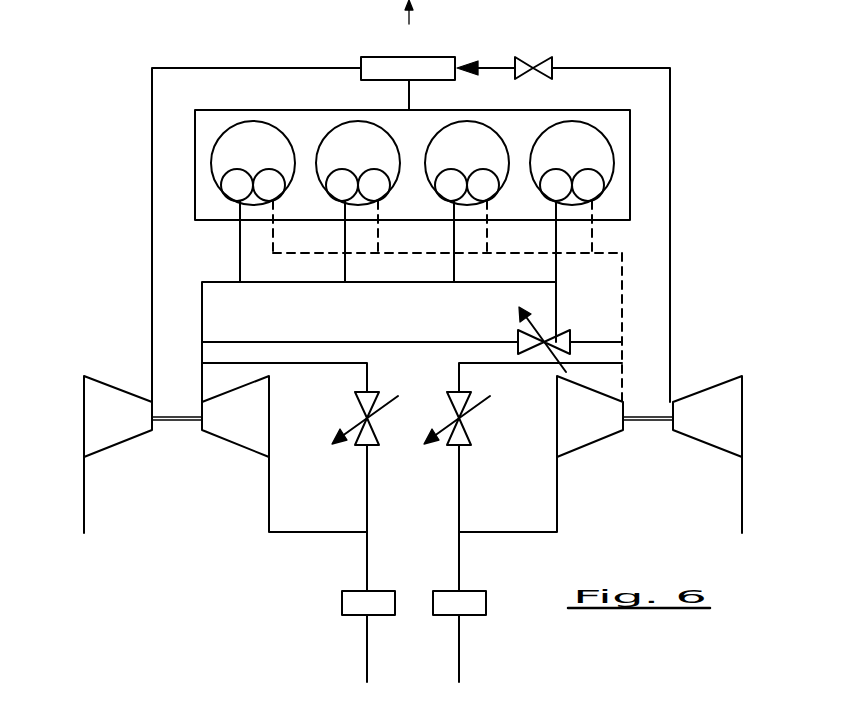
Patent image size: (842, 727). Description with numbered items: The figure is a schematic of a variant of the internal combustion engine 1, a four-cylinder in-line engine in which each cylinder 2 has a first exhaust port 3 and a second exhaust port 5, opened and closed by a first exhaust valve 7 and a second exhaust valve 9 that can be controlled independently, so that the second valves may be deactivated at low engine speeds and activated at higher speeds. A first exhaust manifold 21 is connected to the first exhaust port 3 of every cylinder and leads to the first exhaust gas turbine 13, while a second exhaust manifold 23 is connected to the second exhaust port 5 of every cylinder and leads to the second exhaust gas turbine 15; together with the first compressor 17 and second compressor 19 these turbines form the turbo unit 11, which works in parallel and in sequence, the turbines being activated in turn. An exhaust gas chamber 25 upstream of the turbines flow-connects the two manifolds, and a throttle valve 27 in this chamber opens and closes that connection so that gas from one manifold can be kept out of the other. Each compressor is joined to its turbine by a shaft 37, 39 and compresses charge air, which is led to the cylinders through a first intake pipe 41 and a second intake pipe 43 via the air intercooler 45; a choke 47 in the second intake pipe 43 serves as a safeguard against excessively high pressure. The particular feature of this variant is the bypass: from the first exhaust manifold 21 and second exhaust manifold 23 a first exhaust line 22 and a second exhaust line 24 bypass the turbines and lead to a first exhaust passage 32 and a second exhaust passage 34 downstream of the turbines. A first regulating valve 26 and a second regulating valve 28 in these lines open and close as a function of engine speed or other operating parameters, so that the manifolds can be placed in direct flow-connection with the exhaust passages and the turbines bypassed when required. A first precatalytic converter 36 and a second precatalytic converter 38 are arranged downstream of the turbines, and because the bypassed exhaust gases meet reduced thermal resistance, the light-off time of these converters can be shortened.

The internal combustion engine 1 is at (630, 125).
The cylinder 2 is at (211, 162).
The first exhaust port 3 is at (226, 200).
The second exhaust port 5 is at (270, 203).
The first exhaust valve 7 is at (233, 204).
The second exhaust valve 9 is at (287, 200).
The turbo unit 11 is at (608, 468).
The first exhaust gas turbine 13 is at (237, 432).
The second exhaust gas turbine 15 is at (578, 432).
The first compressor 17 is at (103, 427).
The second compressor 19 is at (703, 432).
The first exhaust manifold 21 is at (202, 302).
The first exhaust line 22 is at (367, 490).
The second exhaust manifold 23 is at (622, 280).
The second exhaust line 24 is at (460, 485).
The exhaust gas chamber 25 is at (355, 342).
The first regulating valve 26 is at (362, 418).
The throttle valve 27 is at (561, 340).
The second regulating valve 28 is at (466, 432).
The first exhaust passage 32 is at (366, 580).
The second exhaust passage 34 is at (461, 548).
The first precatalytic converter 36 is at (383, 611).
The shaft 37 is at (181, 421).
The second precatalytic converter 38 is at (475, 611).
The shaft 39 is at (652, 421).
The first intake pipe 41 is at (150, 238).
The second intake pipe 43 is at (670, 203).
The air intercooler 45 is at (458, 57).
The choke 47 is at (556, 68).